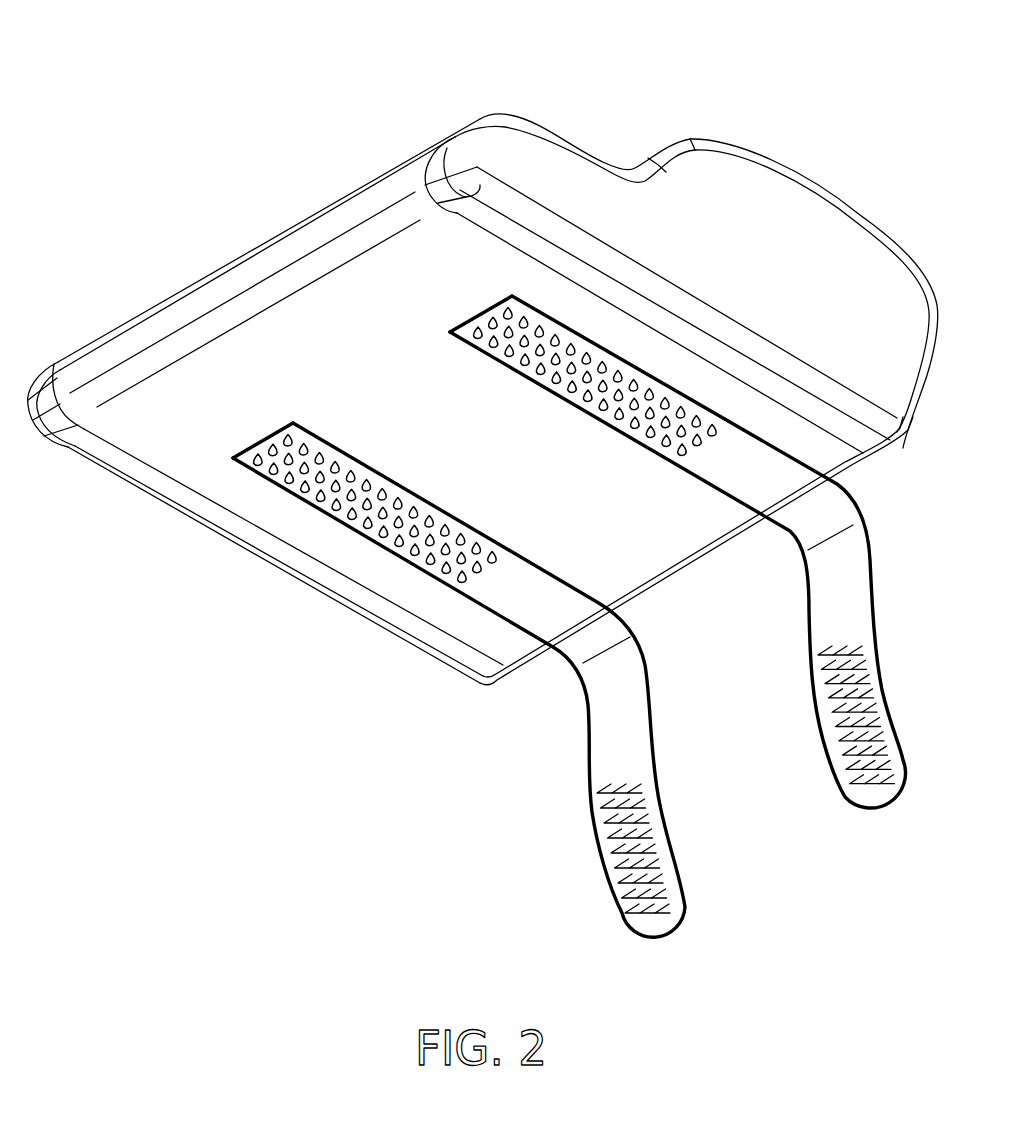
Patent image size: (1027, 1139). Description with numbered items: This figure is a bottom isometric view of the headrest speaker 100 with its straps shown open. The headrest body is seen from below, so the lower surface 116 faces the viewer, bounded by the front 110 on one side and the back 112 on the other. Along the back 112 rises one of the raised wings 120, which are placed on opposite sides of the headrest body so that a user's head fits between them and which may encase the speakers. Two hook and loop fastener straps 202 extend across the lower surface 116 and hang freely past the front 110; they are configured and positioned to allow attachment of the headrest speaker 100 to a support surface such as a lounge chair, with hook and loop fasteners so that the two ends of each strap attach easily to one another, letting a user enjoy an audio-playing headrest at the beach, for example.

The headrest speaker 100 is at (174, 54).
The front 110 is at (244, 237).
The back 112 is at (723, 592).
The lower surface 116 is at (558, 445).
The raised wings 120 is at (790, 269).
The hook and loop fastener straps 202 is at (562, 638).